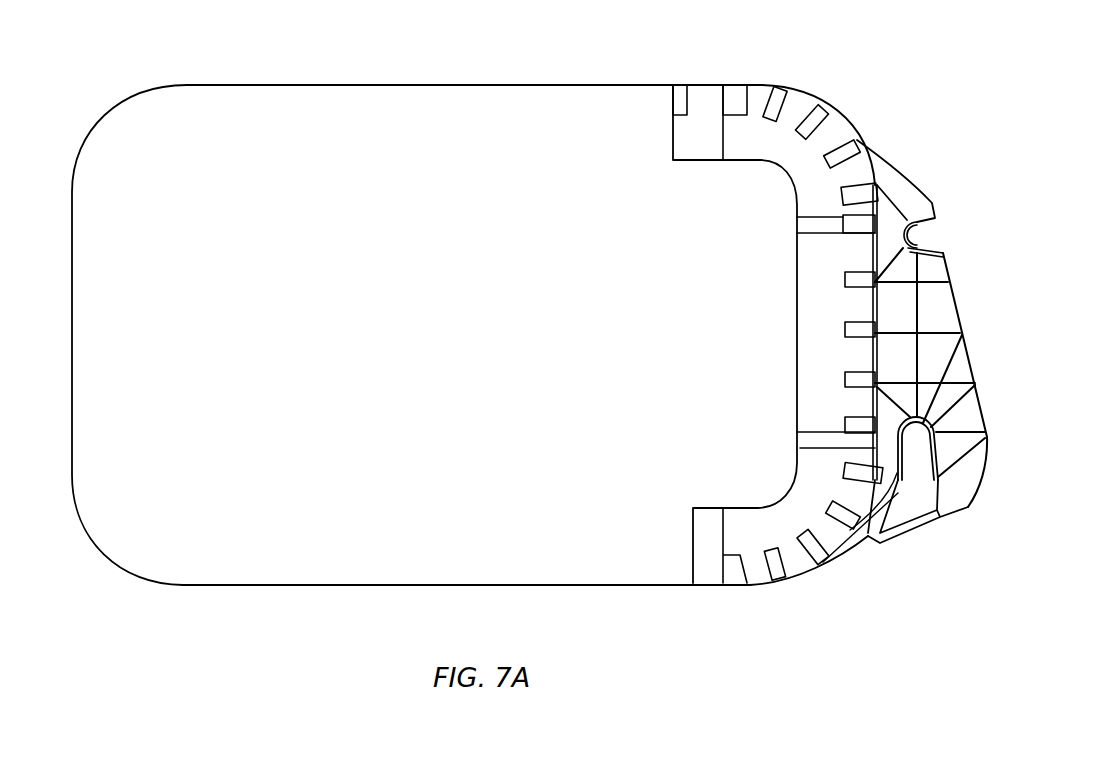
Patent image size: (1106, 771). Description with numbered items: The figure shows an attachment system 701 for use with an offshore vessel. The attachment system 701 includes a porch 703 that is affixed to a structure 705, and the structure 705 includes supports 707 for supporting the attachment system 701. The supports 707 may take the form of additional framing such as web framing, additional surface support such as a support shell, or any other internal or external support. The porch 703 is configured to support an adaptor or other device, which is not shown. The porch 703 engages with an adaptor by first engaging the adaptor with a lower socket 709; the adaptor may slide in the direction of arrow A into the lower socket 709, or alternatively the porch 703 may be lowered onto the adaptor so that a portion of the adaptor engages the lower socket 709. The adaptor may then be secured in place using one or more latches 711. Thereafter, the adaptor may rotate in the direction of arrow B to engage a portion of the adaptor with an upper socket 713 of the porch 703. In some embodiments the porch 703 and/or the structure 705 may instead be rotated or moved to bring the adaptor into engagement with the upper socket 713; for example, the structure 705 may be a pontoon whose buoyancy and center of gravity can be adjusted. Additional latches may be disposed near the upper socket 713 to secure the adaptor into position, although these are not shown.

The attachment system 701 is at (917, 72).
The porch 703 is at (947, 312).
The structure 705 is at (287, 326).
The supports 707 is at (805, 325).
The lower socket 709 is at (917, 423).
The latches 711 is at (938, 516).
The upper socket 713 is at (912, 220).
The arrow A is at (918, 558).
The arrow B is at (942, 231).